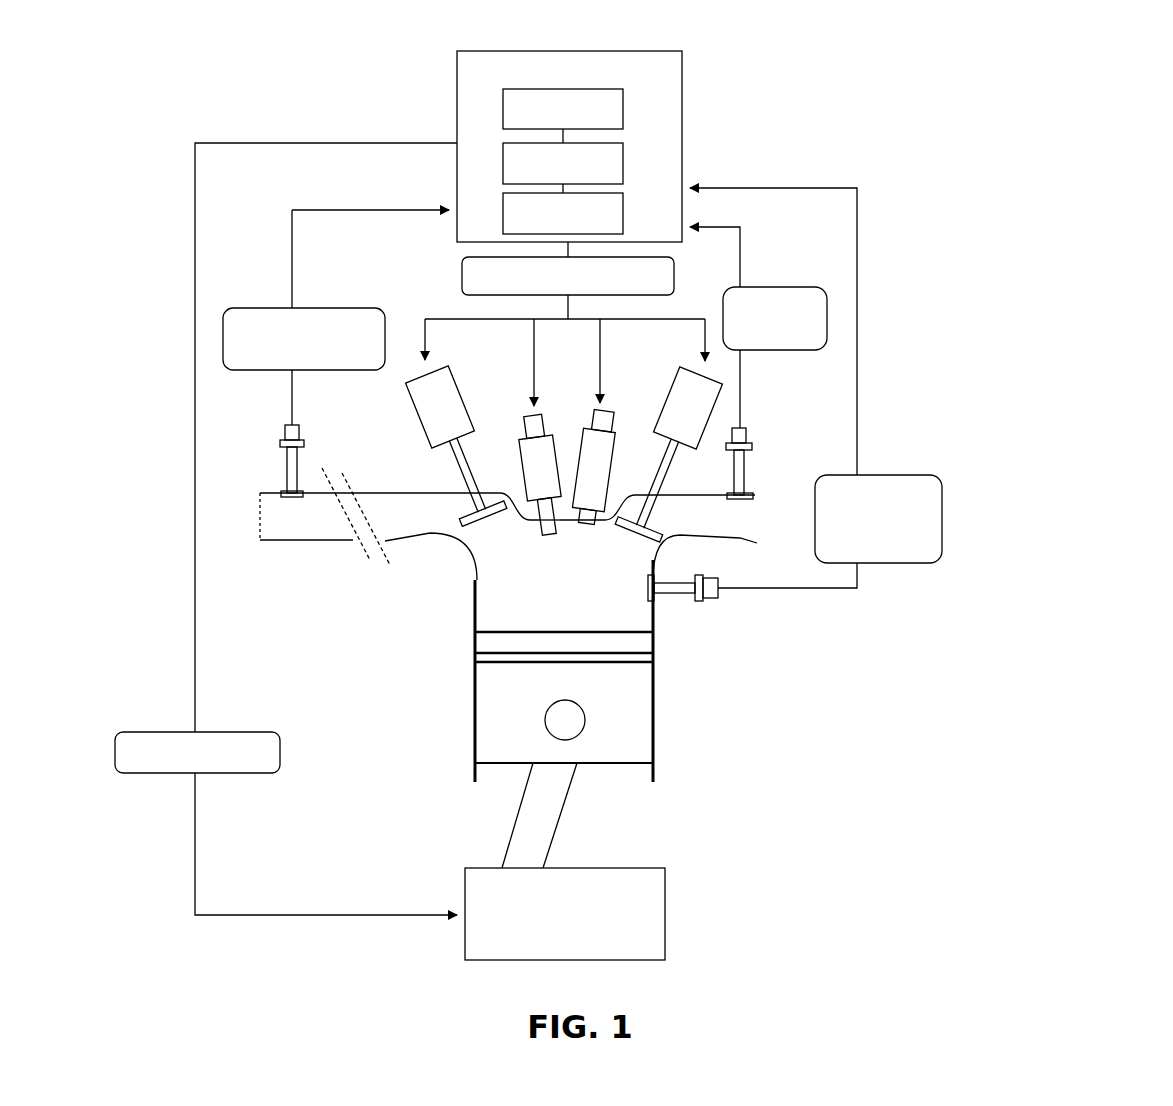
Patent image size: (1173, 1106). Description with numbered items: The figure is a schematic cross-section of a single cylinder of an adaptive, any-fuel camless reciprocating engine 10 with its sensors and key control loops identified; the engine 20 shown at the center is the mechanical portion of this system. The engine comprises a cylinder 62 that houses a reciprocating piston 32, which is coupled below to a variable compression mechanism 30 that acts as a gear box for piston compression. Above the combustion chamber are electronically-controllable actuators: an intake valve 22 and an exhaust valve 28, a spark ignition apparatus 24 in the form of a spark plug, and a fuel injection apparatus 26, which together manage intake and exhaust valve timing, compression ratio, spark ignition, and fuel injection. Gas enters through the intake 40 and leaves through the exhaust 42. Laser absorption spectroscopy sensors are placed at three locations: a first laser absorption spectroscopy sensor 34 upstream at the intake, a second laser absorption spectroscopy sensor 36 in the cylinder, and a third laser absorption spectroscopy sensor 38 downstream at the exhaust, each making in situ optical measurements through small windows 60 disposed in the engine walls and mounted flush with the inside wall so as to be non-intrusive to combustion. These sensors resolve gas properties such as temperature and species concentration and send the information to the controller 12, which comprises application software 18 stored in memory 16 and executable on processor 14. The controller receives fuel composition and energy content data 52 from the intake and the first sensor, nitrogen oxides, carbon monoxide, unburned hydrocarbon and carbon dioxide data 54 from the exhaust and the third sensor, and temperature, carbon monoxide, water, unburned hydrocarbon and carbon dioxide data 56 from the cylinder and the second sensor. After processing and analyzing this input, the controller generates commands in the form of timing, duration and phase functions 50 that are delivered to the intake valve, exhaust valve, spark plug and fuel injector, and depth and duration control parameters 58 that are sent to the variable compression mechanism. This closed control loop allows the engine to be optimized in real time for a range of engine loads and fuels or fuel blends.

The adaptive, any-fuel camless reciprocating engine 10 is at (870, 38).
The controller 12 is at (660, 50).
The processor 14 is at (622, 100).
The memory 16 is at (622, 158).
The application software 18 is at (622, 212).
The engine 20 is at (402, 653).
The intake valve 22 is at (420, 422).
The spark ignition apparatus 24 is at (533, 418).
The fuel injection apparatus 26 is at (598, 415).
The exhaust valve 28 is at (690, 380).
The variable compression mechanism 30 is at (478, 868).
The piston 32 is at (490, 718).
The laser absorption spectroscopy sensor LAS1 34 is at (287, 470).
The laser absorption spectroscopy sensor LAS2 36 is at (718, 598).
The laser absorption spectroscopy sensor LAS3 38 is at (746, 432).
The intake 40 is at (290, 545).
The exhaust 42 is at (735, 544).
The functions 50 is at (462, 272).
The fuel composition and energy content data 52 is at (280, 308).
The NOx, CO, UHC, CO2 data 54 is at (755, 287).
The temperature, CO, H2O, UHC, CO2 data 56 is at (870, 475).
The control parameters 58 is at (205, 732).
The windows 60 is at (280, 497).
The cylinder 62 is at (475, 578).